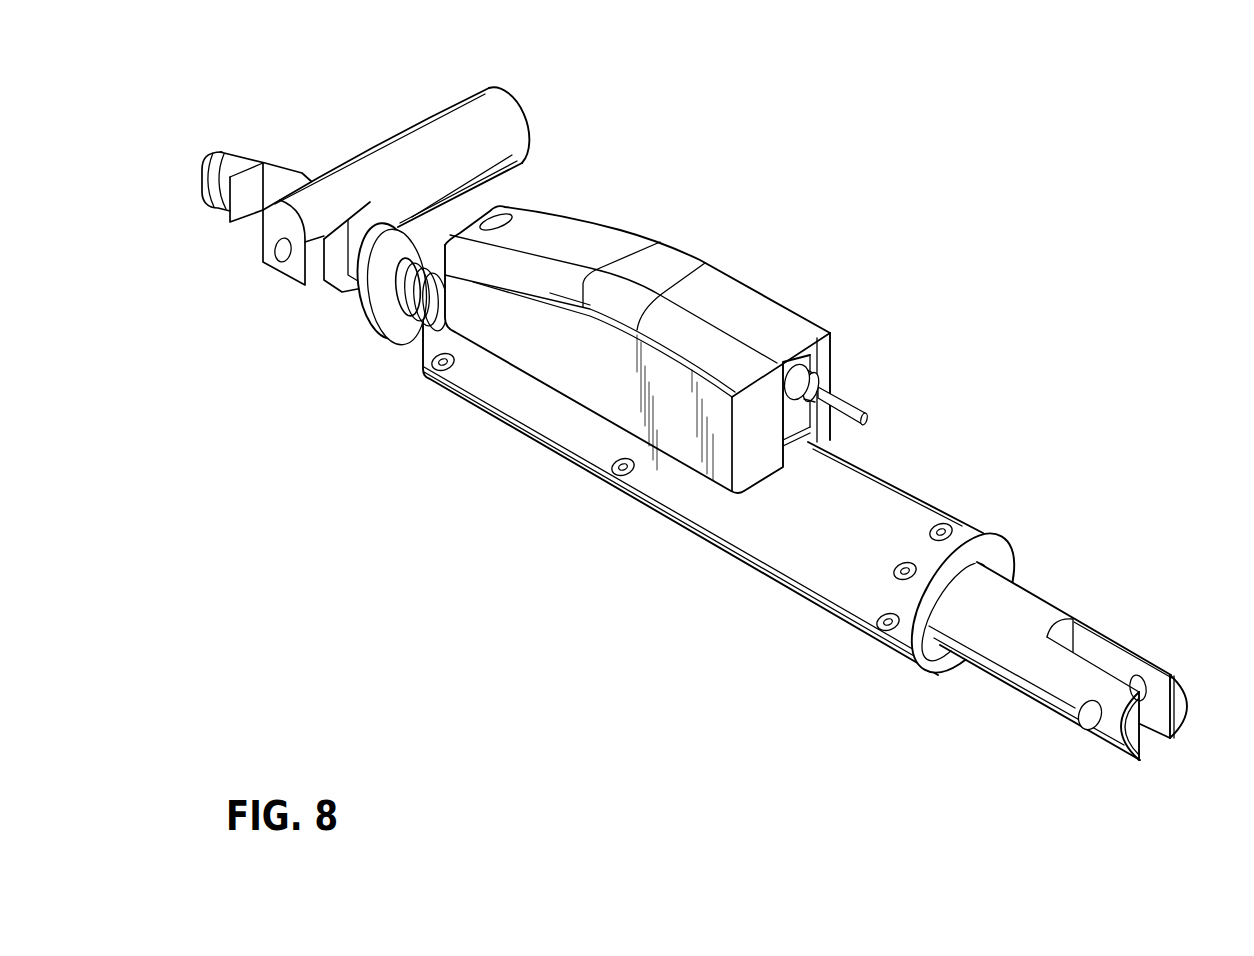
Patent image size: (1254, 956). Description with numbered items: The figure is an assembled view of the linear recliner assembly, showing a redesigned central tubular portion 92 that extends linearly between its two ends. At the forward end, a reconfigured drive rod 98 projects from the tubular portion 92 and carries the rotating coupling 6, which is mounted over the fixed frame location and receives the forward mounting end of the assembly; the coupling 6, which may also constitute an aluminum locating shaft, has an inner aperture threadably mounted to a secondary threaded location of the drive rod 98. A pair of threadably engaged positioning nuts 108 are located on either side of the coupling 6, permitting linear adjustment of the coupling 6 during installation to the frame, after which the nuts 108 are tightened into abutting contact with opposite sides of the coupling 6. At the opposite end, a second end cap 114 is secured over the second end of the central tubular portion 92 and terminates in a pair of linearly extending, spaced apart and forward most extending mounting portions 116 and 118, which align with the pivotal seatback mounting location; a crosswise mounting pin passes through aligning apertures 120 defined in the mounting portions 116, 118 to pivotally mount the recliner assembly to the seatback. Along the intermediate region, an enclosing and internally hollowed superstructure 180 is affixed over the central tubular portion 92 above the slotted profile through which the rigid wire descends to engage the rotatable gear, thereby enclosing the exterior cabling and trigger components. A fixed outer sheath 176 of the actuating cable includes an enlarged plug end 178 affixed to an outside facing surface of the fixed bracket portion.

The rotating coupling 6 is at (435, 142).
The central tubular portion 92 is at (747, 530).
The drive rod 98 is at (420, 303).
The positioning nuts 108 is at (362, 323).
The second end cap 114 is at (1018, 608).
The mounting portion 116 is at (1112, 748).
The mounting portion 118 is at (1178, 697).
The aligning aperture 120 is at (1083, 718).
The fixed outer sheath 176 is at (847, 398).
The enlarged plug end 178 is at (808, 368).
The superstructure 180 is at (658, 262).